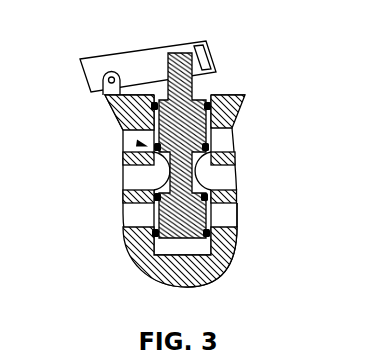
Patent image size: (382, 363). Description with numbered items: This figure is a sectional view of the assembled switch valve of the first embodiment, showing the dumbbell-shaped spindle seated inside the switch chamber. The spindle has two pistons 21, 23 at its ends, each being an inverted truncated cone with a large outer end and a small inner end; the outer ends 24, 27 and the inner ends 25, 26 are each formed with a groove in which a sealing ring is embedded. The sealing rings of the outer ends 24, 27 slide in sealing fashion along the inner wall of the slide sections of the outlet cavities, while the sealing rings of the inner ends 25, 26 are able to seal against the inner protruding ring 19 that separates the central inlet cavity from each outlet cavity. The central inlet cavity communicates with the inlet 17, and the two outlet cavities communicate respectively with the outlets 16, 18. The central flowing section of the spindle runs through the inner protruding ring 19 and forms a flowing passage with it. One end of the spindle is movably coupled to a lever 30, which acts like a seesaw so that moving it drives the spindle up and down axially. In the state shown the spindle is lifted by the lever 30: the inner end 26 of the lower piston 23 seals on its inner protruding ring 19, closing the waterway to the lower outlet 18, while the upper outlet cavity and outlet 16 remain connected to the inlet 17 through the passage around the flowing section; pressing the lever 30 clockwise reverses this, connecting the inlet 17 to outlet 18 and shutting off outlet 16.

The lever 30 is at (100, 46).
The outer end 24 is at (108, 104).
The piston 21 is at (130, 123).
The inner end 25 is at (152, 153).
The inner protruding ring 19 is at (150, 170).
The inner end 26 is at (150, 199).
The piston 23 is at (152, 231).
The outer end 27 is at (152, 234).
The outlet 16 is at (222, 141).
The inlet 17 is at (221, 181).
The outlet 18 is at (227, 220).